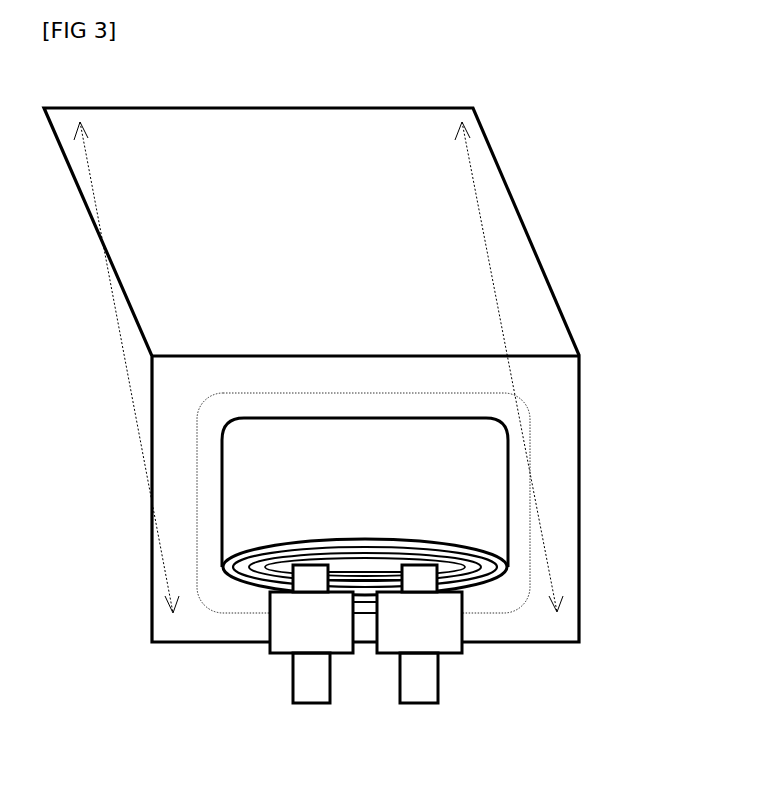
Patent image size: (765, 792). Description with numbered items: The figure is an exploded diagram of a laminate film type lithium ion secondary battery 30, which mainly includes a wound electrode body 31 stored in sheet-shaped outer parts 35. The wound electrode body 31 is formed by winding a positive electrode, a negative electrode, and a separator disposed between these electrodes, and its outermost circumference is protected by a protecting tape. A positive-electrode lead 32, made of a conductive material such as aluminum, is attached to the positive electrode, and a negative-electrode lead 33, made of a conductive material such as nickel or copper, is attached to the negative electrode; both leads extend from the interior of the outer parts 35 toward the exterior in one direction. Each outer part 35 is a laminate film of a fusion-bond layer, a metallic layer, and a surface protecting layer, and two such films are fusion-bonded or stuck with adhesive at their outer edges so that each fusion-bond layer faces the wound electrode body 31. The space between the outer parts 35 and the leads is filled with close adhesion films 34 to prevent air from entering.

The laminate film type lithium ion secondary battery 30 is at (520, 125).
The wound electrode body 31 is at (460, 485).
The positive-electrode lead 32 is at (307, 685).
The negative-electrode lead 33 is at (418, 685).
The close adhesion film 34 is at (445, 628).
The outer part 35 is at (385, 238).